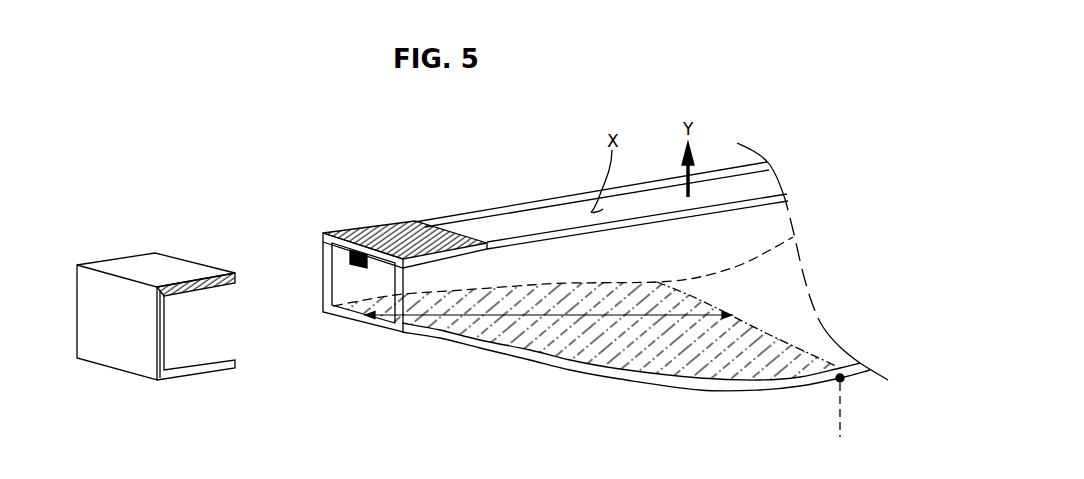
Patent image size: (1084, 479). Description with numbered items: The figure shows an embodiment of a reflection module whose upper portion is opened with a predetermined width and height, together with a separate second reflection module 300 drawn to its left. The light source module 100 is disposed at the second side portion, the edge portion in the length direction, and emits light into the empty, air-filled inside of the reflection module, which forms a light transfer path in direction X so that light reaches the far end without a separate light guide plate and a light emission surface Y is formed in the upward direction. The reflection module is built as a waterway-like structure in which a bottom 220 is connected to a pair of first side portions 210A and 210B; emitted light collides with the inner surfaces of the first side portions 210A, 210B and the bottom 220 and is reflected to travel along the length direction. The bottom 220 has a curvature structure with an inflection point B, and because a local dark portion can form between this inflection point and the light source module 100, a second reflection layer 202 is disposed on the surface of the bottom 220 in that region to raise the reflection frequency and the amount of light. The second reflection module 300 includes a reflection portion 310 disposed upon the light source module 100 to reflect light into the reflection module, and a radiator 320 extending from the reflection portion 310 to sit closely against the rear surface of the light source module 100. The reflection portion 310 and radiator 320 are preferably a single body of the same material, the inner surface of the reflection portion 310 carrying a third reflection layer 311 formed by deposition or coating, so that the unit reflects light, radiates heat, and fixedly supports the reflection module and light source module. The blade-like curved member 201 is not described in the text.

The light source module 100 is at (348, 252).
The blade 201 is at (513, 332).
The second reflection layer 202 is at (344, 293).
The first side portion 210A is at (463, 212).
The first side portion 210B is at (517, 237).
The bottom 220 is at (350, 316).
The second reflection module 300 is at (157, 268).
The reflection portion 310 is at (165, 288).
The third reflection layer 311 is at (195, 283).
The radiator 320 is at (80, 288).